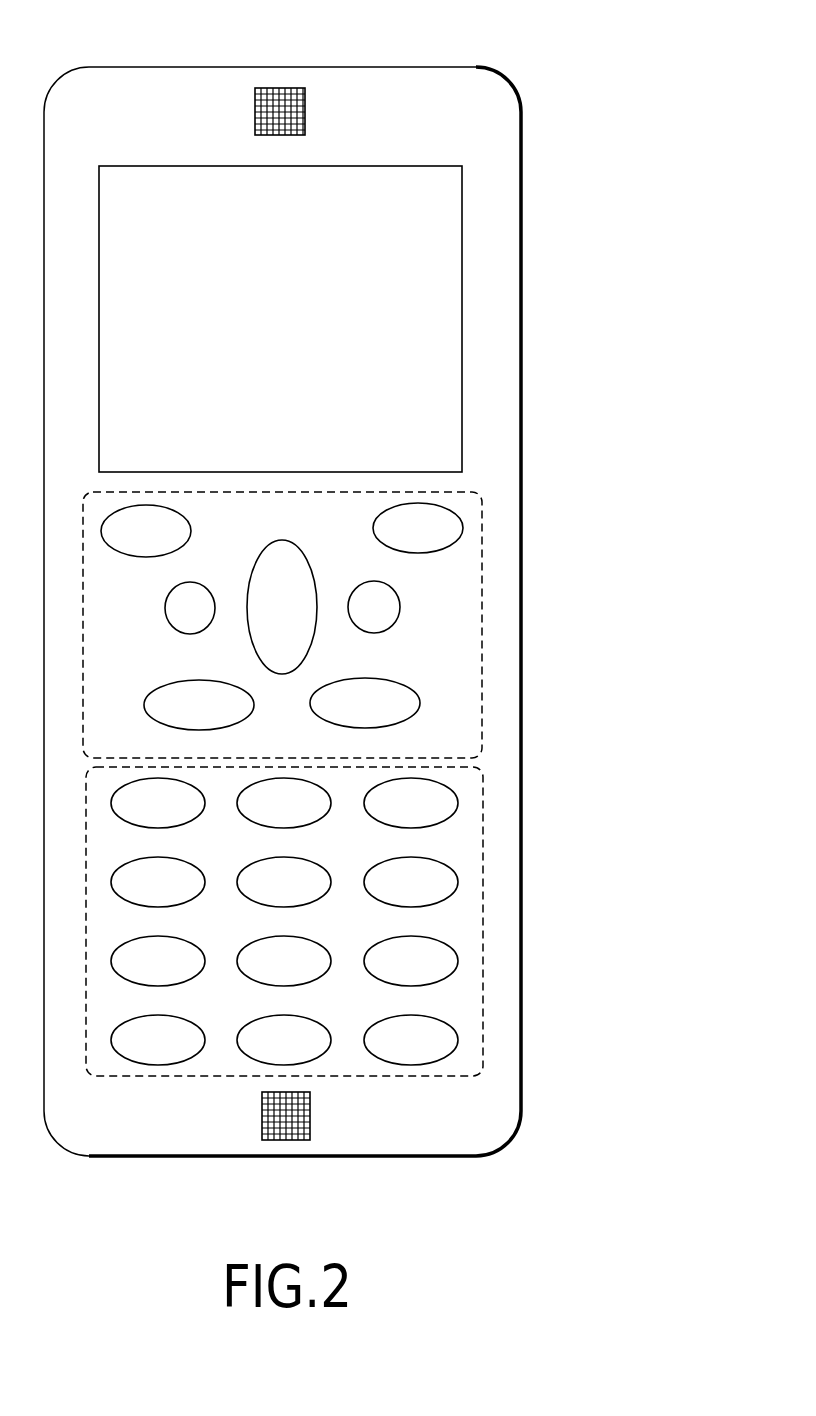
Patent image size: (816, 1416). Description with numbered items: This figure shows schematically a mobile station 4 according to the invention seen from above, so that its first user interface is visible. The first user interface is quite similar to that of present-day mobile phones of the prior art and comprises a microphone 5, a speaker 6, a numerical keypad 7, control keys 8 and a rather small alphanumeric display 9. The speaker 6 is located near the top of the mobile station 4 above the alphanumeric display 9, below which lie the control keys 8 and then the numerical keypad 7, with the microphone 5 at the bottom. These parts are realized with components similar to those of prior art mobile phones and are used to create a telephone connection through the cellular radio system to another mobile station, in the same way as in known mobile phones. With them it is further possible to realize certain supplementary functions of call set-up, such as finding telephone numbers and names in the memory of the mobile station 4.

The mobile station 4 is at (636, 637).
The microphone 5 is at (272, 1140).
The speaker 6 is at (290, 106).
The numerical keypad 7 is at (483, 837).
The control keys 8 is at (482, 511).
The alphanumeric display 9 is at (405, 268).